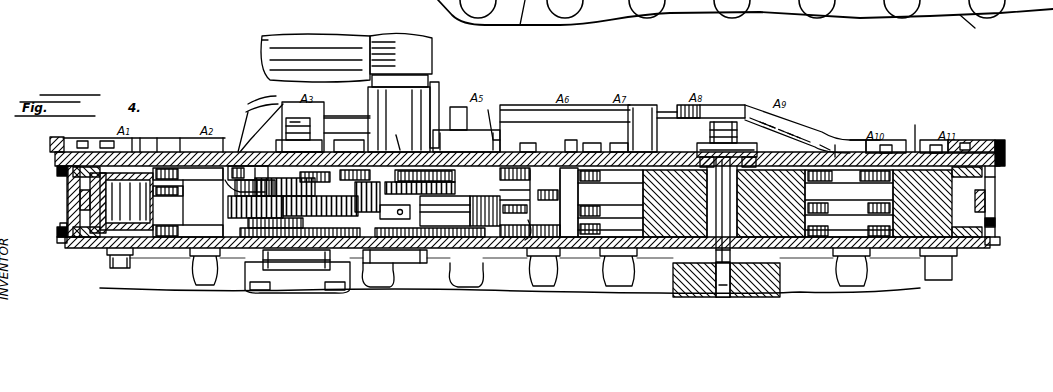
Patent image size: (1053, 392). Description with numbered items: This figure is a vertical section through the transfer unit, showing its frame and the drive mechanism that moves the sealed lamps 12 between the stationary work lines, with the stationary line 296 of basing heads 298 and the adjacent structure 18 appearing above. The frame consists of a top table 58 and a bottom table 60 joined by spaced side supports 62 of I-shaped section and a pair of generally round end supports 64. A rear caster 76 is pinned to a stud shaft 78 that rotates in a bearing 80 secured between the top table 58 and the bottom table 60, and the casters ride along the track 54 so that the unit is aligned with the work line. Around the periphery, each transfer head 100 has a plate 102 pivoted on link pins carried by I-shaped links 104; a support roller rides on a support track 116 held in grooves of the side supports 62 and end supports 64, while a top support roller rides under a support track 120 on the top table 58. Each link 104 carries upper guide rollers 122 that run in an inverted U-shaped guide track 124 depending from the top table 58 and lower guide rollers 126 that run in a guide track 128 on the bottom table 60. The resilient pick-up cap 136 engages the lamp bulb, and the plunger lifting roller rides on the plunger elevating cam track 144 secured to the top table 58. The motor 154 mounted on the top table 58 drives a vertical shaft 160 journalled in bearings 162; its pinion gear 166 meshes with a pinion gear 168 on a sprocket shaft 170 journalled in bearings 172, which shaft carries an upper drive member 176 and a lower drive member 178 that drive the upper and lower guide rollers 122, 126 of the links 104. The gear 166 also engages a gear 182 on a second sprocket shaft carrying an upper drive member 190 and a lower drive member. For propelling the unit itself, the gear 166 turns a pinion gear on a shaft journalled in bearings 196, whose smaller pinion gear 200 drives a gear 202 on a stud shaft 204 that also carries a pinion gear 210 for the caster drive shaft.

The sealed lamp 12 is at (193, 273).
The frame 18 is at (972, 32).
The track 54 is at (872, 288).
The top table 58 is at (612, 152).
The bottom table 60 is at (560, 235).
The side supports 62 is at (180, 170).
The end supports 64 is at (136, 152).
The rear caster 76 is at (782, 275).
The stud shaft 78 is at (727, 178).
The bearing 80 is at (800, 155).
The transfer heads 100 is at (955, 278).
The plate 102 is at (78, 205).
The I-shaped links 104 is at (66, 222).
The support track 116 is at (66, 196).
The support track 120 is at (60, 152).
The upper guide rollers 122 is at (66, 178).
The guide track 124 is at (58, 166).
The lower guide rollers 126 is at (62, 228).
The guide track 128 is at (63, 240).
The pick-up cap 136 is at (107, 263).
The plunger elevating cam track 144 is at (55, 142).
The motor 154 is at (306, 45).
The vertical shaft 160 is at (398, 150).
The bearings 162 is at (438, 84).
The pinion gear 166 is at (430, 258).
The pinion gear 168 is at (528, 160).
The sprocket shaft 170 is at (457, 107).
The bearings 172 is at (500, 112).
The upper drive member 176 is at (507, 150).
The lower drive member 178 is at (565, 195).
The gear 182 is at (342, 150).
The upper drive member 190 is at (380, 150).
The bearings 196 is at (347, 117).
The pinion gear 200 is at (312, 250).
The gear 202 is at (228, 207).
The stud shaft 204 is at (246, 112).
The pinion gear 210 is at (230, 192).
The stationary line 296 is at (519, 28).
The basing heads 298 is at (577, 15).